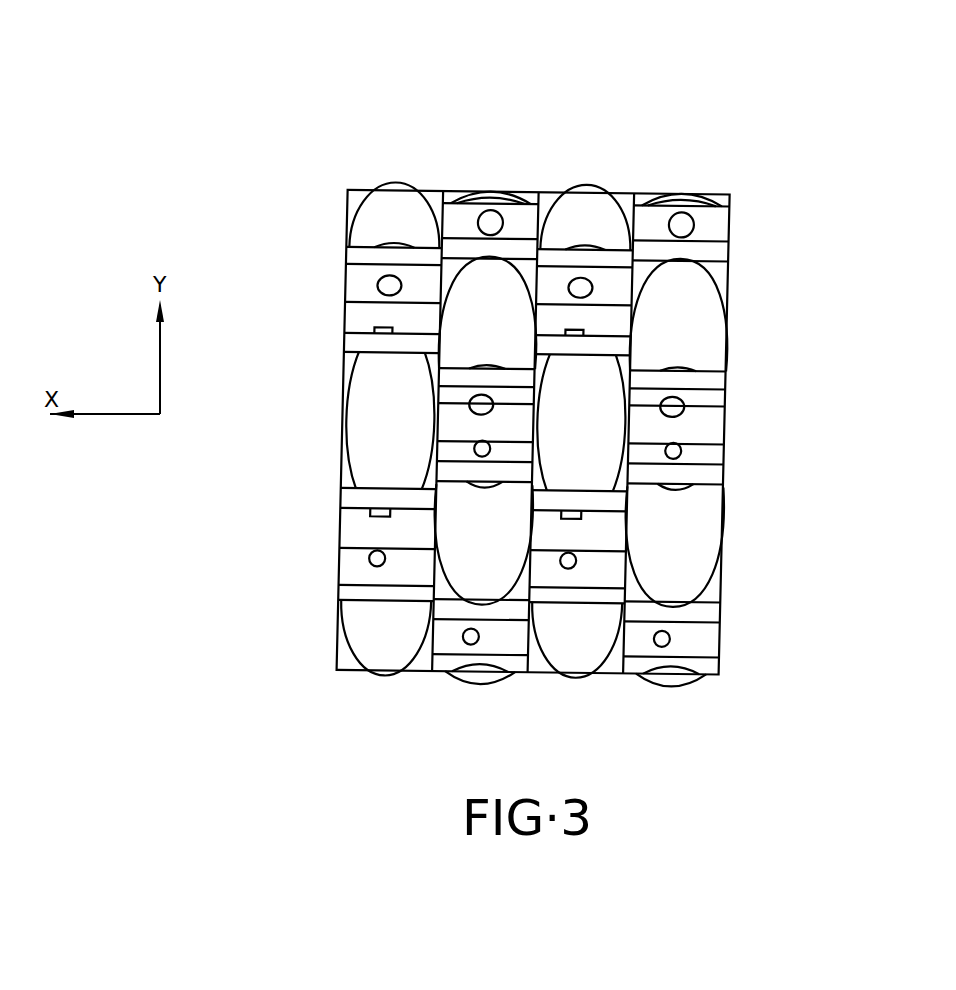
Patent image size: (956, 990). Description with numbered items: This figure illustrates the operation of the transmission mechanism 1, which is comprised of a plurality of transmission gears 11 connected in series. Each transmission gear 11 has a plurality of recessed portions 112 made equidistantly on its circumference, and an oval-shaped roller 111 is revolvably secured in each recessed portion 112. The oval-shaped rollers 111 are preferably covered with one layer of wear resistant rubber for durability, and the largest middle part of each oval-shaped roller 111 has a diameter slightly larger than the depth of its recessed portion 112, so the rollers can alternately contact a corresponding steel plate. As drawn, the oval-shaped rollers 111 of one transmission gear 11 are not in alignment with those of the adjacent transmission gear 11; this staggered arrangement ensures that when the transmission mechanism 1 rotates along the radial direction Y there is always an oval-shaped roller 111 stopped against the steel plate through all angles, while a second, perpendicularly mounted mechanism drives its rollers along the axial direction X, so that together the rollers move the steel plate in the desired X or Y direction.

The transmission mechanism 1 is at (648, 116).
The transmission gear 11 is at (390, 424).
The oval-shaped roller 111 is at (394, 215).
The recessed portion 112 is at (388, 496).